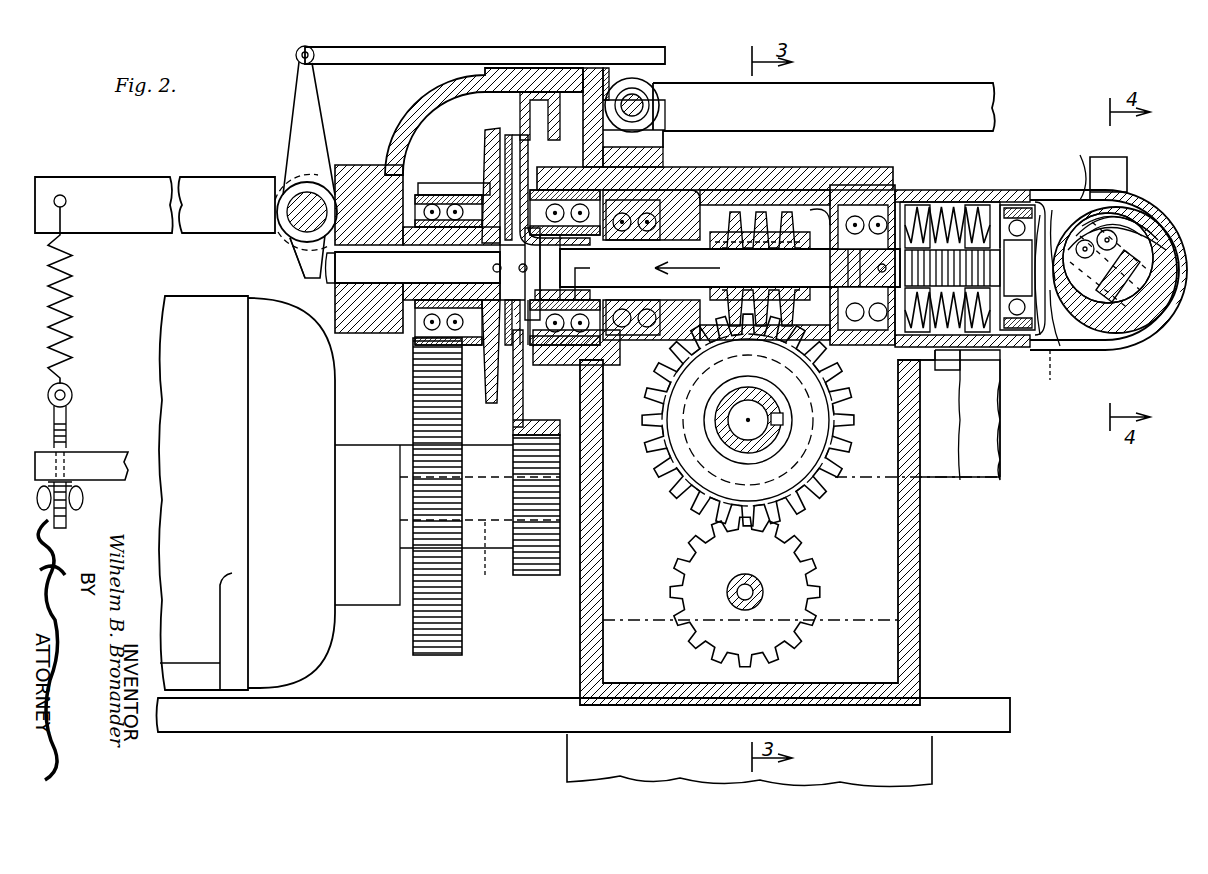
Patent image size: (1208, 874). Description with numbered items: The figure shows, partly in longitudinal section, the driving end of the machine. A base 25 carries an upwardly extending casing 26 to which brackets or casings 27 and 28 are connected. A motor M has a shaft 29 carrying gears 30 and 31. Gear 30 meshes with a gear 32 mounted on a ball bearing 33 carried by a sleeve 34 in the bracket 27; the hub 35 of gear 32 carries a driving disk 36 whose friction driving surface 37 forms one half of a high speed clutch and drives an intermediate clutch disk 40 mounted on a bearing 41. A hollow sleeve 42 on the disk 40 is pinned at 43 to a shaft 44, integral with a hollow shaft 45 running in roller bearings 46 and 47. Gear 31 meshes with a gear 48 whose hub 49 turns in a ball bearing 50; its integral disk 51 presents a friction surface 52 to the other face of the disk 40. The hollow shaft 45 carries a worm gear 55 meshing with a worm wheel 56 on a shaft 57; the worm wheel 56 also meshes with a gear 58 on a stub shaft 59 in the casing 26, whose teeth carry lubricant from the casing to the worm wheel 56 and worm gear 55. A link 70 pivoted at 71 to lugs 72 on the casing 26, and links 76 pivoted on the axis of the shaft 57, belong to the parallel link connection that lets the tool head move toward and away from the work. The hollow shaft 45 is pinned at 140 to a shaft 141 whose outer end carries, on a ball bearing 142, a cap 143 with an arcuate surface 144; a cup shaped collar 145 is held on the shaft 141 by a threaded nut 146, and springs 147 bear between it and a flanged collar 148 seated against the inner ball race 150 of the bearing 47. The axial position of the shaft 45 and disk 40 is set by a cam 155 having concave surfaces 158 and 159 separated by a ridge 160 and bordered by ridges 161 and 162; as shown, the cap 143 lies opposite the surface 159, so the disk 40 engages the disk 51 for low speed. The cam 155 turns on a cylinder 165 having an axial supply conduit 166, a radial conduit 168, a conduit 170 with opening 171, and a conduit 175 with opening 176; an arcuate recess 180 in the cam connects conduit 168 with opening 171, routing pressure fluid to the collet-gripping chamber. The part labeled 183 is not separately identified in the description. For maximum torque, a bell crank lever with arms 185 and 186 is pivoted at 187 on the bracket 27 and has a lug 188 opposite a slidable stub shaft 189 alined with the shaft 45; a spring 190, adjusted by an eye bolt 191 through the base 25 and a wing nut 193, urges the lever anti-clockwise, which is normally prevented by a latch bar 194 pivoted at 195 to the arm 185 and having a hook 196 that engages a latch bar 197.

The base 25 is at (120, 450).
The casing 26 is at (918, 578).
The bracket 27 is at (400, 128).
The bracket 28 is at (960, 190).
The motor shaft 29 is at (447, 525).
The gear 30 is at (412, 647).
The gear 31 is at (533, 575).
The gear 32 is at (428, 183).
The ball bearing 33 is at (410, 322).
The sleeve 34 is at (370, 333).
The hub 35 is at (470, 192).
The driving disk 36 is at (490, 138).
The friction driving surface 37 is at (500, 128).
The intermediate clutch disk 40 is at (512, 68).
The bearing 41 is at (470, 266).
The hollow sleeve 42 is at (527, 268).
The pin 43 is at (509, 274).
The shaft 44 is at (576, 270).
The hollow shaft 45 is at (690, 248).
The roller bearing 46 is at (660, 210).
The roller bearing 47 is at (850, 205).
The gear 48 is at (552, 92).
The hub 49 is at (565, 342).
The ball bearing 50 is at (598, 345).
The clutch disk 51 is at (522, 160).
The friction surface 52 is at (515, 138).
The worm gear 55 is at (760, 212).
The worm wheel 56 is at (822, 492).
The shaft 57 is at (725, 440).
The gear 58 is at (672, 583).
The stub shaft 59 is at (748, 582).
The link 70 is at (808, 84).
The pivot 71 is at (644, 106).
The lugs 72 is at (655, 140).
The links 76 is at (958, 468).
The pin 140 is at (878, 268).
The shaft 141 is at (866, 262).
The ball bearing 142 is at (1010, 228).
The cap 143 is at (1016, 200).
The arcuate surface 144 is at (1040, 345).
The cup shaped collar 145 is at (957, 350).
The nut 146 is at (978, 332).
The springs 147 is at (952, 200).
The flanged collar 148 is at (908, 205).
The inner ball race 150 is at (820, 232).
The cam 155 is at (1140, 312).
The concave cam surface 158 is at (1052, 210).
The concave cam surface 159 is at (1066, 348).
The ridge 160 is at (1048, 210).
The ridge 161 is at (1080, 156).
The ridge 162 is at (1048, 380).
The cylinder 165 is at (1145, 300).
The conduit 166 is at (1088, 260).
The conduit 168 is at (1128, 285).
The conduit 170 is at (1118, 238).
The opening 171 is at (1125, 226).
The conduit 175 is at (1120, 218).
The opening 176 is at (1112, 210).
The recess 180 is at (1148, 244).
The plate 183 is at (1100, 156).
The arm 185 is at (291, 118).
The arm 186 is at (208, 185).
The pivot 187 is at (285, 218).
The lug 188 is at (300, 268).
The slidable stub shaft 189 is at (330, 280).
The spring 190 is at (72, 288).
The eye bolt 191 is at (68, 422).
The wing nut 193 is at (40, 488).
The latch bar 194 is at (440, 47).
The pivot 195 is at (303, 46).
The hook 196 is at (616, 70).
The latch bar 197 is at (606, 68).